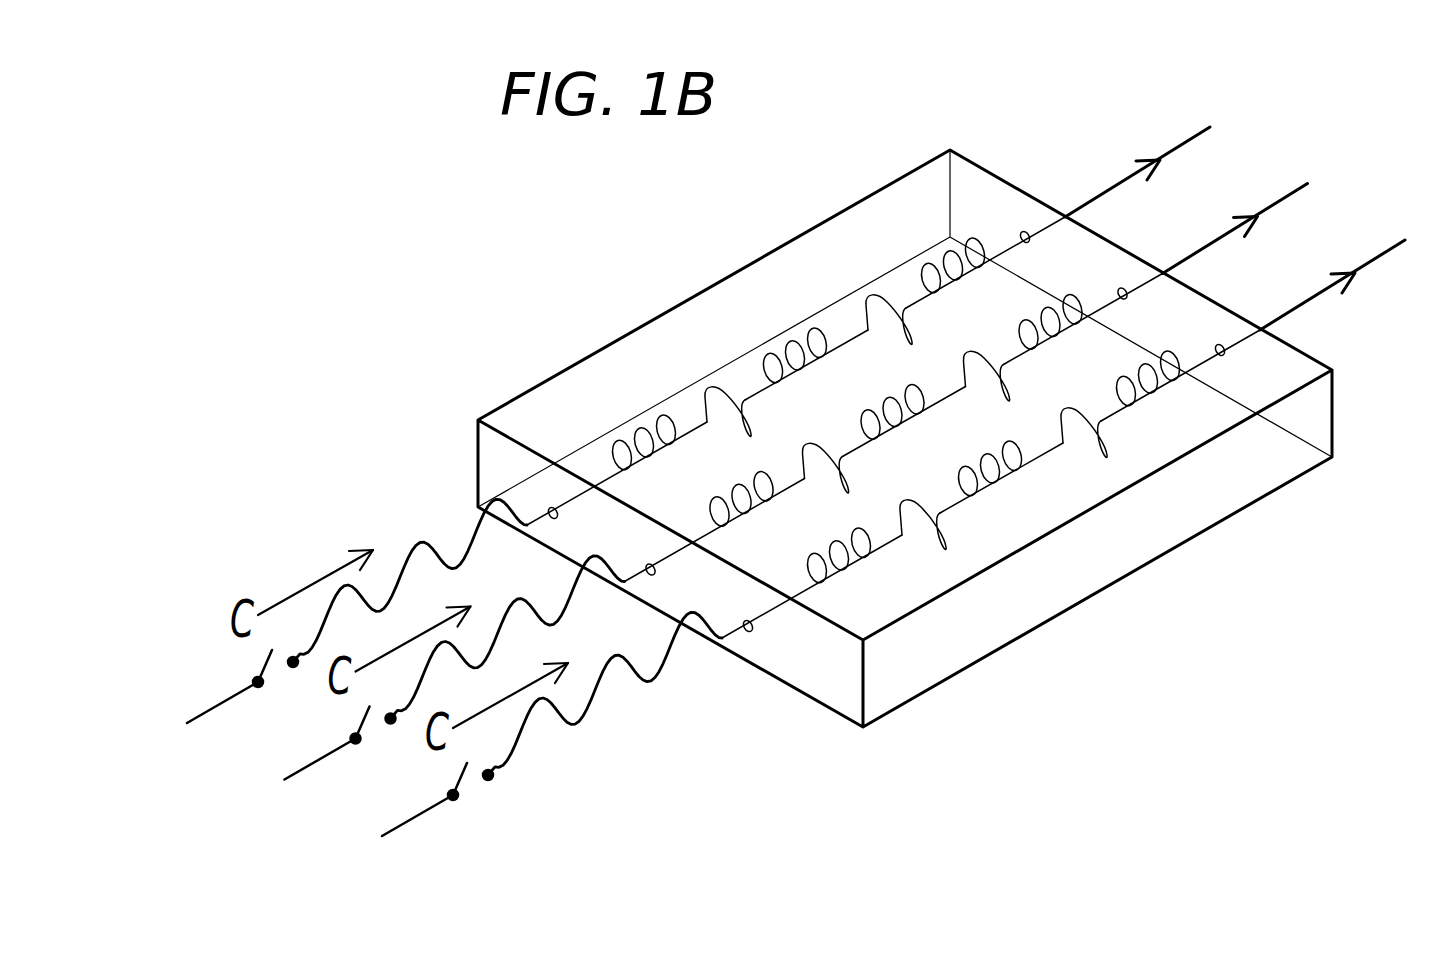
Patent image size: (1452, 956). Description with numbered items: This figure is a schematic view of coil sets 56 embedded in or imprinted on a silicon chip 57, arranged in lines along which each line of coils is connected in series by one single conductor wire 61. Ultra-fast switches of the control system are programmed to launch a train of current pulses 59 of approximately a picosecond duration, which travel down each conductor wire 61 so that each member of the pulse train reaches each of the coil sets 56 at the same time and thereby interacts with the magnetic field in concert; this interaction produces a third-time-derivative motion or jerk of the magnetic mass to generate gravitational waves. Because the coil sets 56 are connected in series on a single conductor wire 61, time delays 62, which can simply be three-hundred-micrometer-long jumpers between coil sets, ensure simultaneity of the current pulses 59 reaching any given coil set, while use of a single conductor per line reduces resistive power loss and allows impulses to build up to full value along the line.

The coil sets 56 is at (643, 445).
The silicon chip 57 is at (935, 685).
The current pulses 59 is at (542, 728).
The conductor wire 61 is at (1045, 225).
The time delays 62 is at (947, 538).